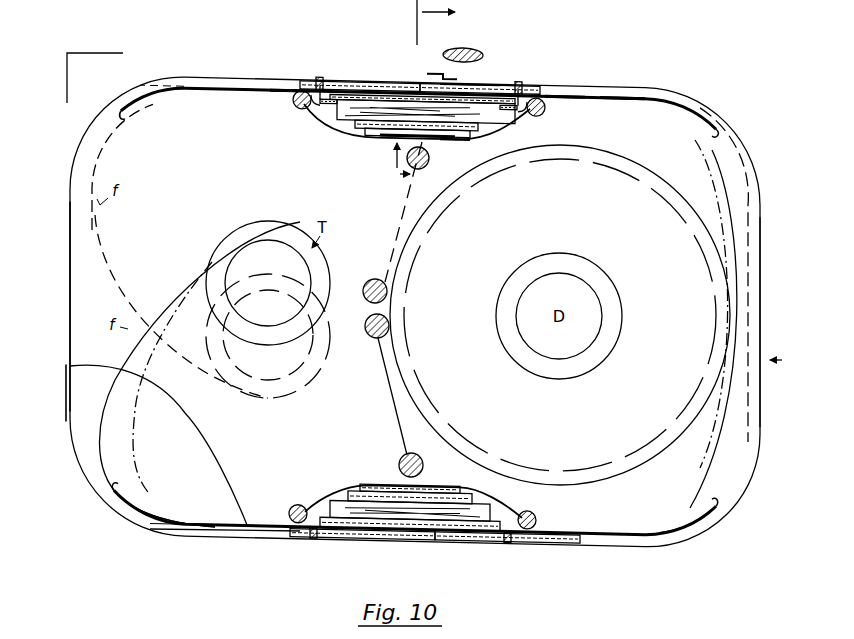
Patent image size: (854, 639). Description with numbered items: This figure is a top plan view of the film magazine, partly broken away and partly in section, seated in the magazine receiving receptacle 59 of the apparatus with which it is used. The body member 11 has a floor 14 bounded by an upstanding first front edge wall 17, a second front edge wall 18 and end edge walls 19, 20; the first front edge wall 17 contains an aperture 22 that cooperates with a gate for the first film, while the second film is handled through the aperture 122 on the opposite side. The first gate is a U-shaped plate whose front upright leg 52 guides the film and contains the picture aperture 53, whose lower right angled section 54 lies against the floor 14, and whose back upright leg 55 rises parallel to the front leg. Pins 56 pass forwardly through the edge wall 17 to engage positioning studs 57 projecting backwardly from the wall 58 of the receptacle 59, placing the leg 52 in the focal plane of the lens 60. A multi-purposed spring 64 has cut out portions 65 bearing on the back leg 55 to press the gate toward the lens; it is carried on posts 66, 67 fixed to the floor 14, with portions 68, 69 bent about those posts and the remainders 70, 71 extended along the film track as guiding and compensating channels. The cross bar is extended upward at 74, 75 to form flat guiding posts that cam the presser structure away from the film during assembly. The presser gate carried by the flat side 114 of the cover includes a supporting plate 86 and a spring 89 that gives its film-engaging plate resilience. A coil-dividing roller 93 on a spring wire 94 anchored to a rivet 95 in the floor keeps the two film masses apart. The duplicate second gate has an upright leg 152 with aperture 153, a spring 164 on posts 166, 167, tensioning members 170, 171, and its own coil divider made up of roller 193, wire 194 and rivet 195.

The body member 11 is at (588, 184).
The floor 14 is at (707, 329).
The first front edge wall 17 is at (626, 86).
The second front edge wall 18 is at (548, 542).
The end edge wall 19 is at (760, 278).
The end edge wall 20 is at (70, 255).
The aperture 22 is at (466, 83).
The front upright leg 52 is at (360, 82).
The aperture 53 is at (500, 83).
The lower right angled section 54 is at (436, 73).
The back upright leg 55 is at (466, 137).
The pins 56 is at (312, 86).
The positioning studs 57 is at (320, 77).
The wall 58 is at (550, 85).
The magazine receiving receptacle 59 is at (95, 78).
The lens 60 is at (448, 50).
The multi-purposed spring 64 is at (397, 139).
The cut out portions 65 is at (434, 139).
The post 66 is at (546, 107).
The post 67 is at (296, 100).
The bent portion 68 is at (540, 112).
The bent portion 69 is at (307, 108).
The spring remainder 70 is at (628, 99).
The spring remainder 71 is at (189, 90).
The guiding post 74 is at (513, 114).
The guiding post 75 is at (332, 110).
The supporting plate 86 is at (360, 133).
The spring 89 is at (448, 105).
The coil-dividing roller 93 is at (366, 280).
The spring wire 94 is at (395, 212).
The rivet 95 is at (419, 169).
The flat side 114 is at (188, 523).
The aperture 122 is at (440, 533).
The upright leg 152 is at (340, 538).
The aperture 153 is at (470, 541).
The multi-purposed spring 164 is at (413, 489).
The post 166 is at (547, 508).
The post 167 is at (289, 511).
The tensioning member 170 is at (666, 515).
The tensioning member 171 is at (226, 533).
The coil divider roller 193 is at (369, 337).
The spring wire 194 is at (393, 390).
The rivet 195 is at (398, 465).